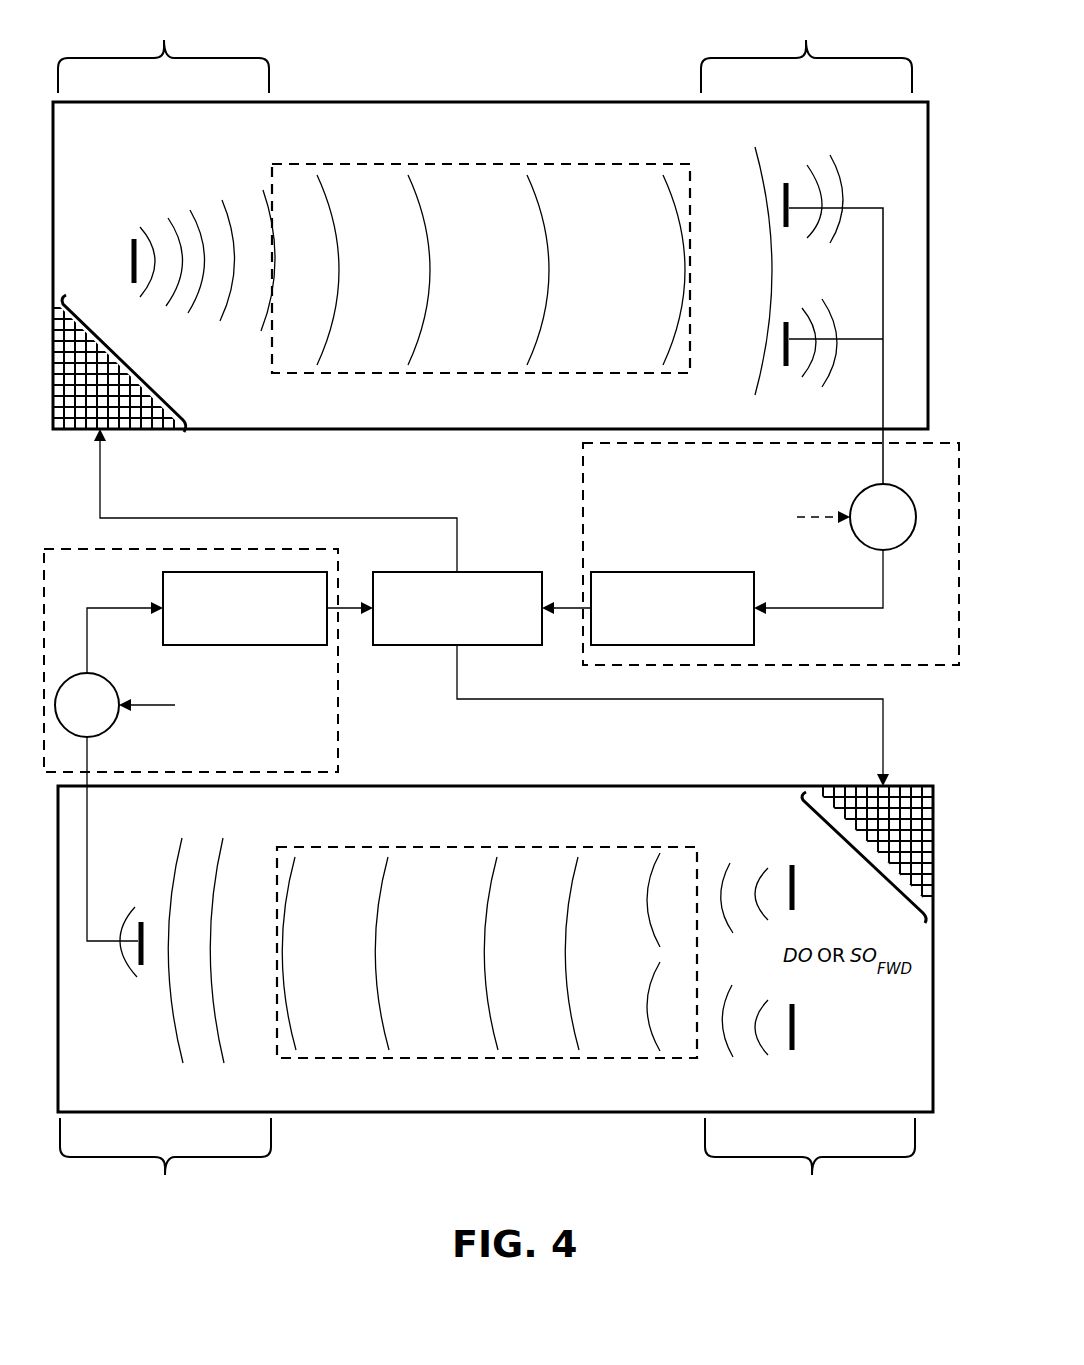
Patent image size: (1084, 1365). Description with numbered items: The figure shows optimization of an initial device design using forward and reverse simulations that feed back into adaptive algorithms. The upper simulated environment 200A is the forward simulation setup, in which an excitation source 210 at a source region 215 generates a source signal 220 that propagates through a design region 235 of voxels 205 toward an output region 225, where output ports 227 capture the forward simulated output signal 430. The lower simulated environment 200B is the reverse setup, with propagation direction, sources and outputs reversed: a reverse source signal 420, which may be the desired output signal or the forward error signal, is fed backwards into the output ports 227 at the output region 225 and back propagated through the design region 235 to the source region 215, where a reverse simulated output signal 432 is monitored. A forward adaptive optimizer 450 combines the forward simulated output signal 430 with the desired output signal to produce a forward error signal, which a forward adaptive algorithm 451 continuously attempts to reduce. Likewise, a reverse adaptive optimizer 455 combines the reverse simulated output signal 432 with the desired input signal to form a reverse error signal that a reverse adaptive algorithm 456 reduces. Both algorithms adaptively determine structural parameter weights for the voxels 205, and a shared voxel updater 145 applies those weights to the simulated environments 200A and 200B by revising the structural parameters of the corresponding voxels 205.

The simulated environment 200A is at (116, 146).
The simulated environment 200B is at (124, 1096).
The voxels 205 is at (126, 356).
The excitation source 210 is at (133, 236).
The source signal 220 is at (170, 222).
The output region 225 is at (808, 608).
The source region 215 is at (164, 608).
The output ports 227 is at (786, 236).
The design region 235 is at (497, 279).
The reverse source signal 420 is at (757, 887).
The forward simulated output signal 430 is at (838, 170).
The reverse simulated output signal 432 is at (128, 980).
The forward adaptive optimizer 450 is at (736, 511).
The forward adaptive algorithm 451 is at (745, 631).
The reverse adaptive optimizer 455 is at (331, 758).
The reverse adaptive algorithm 456 is at (318, 631).
The voxel updater 145 is at (522, 631).